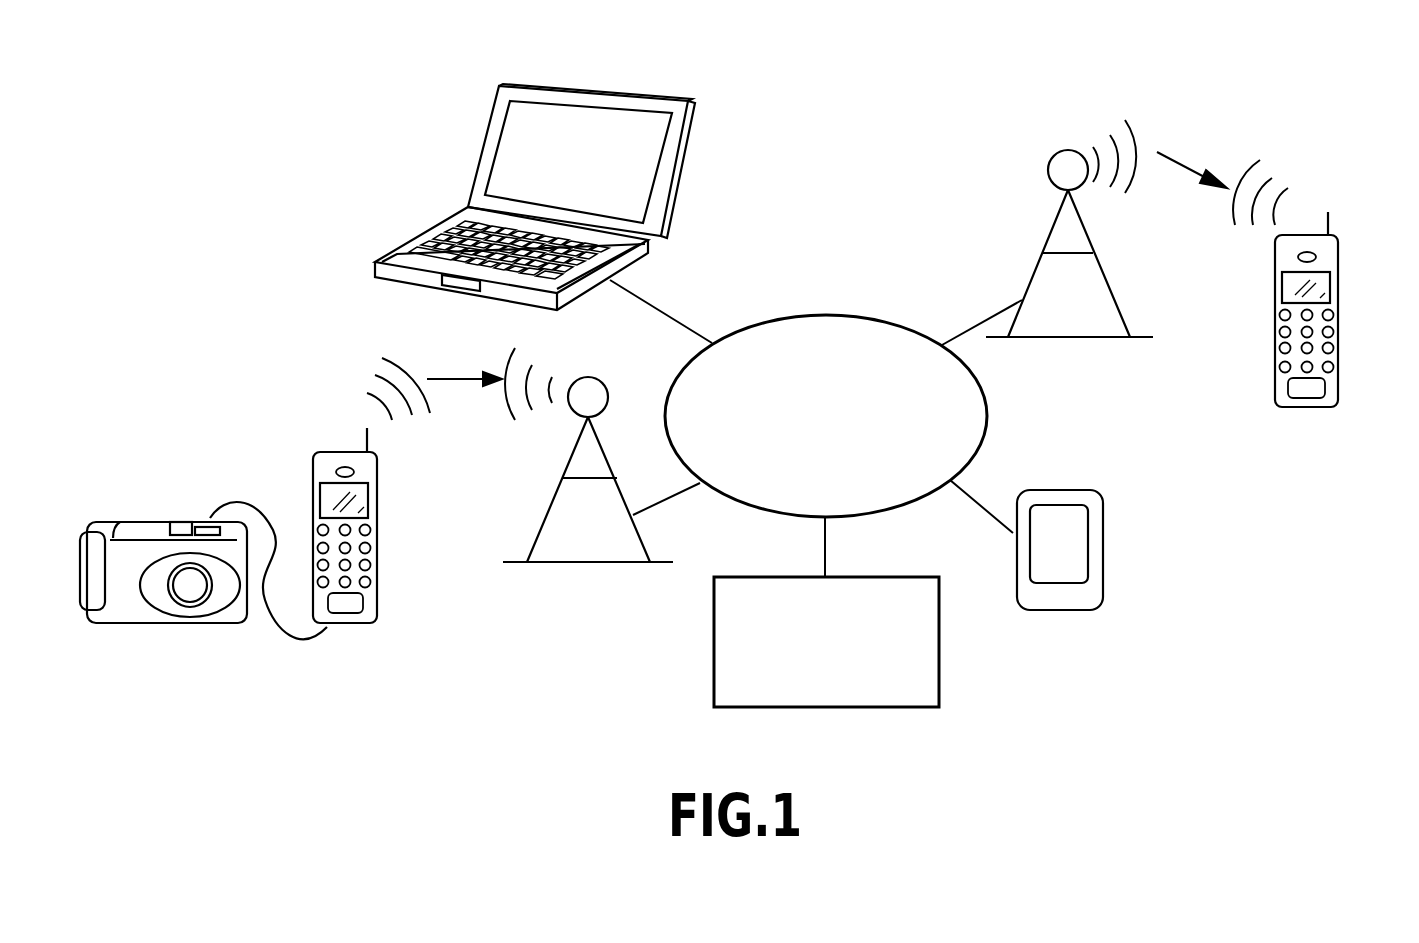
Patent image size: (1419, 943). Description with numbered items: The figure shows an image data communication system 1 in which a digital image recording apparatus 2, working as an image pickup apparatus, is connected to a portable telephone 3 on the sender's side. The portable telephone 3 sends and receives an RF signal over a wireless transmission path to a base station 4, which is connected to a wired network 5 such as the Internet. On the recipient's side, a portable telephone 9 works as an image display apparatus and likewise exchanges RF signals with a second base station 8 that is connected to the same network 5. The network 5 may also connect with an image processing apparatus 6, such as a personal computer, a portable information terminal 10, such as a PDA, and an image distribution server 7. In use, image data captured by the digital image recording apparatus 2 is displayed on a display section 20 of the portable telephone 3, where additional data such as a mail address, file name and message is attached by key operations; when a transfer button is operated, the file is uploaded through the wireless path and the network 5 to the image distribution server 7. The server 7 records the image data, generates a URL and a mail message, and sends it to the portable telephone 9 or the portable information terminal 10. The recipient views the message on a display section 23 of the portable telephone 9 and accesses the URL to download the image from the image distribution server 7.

The image data communication system 1 is at (841, 45).
The digital image recording apparatus 2 is at (127, 520).
The portable telephone 3 is at (389, 490).
The display section 20 is at (368, 503).
The base station 4 is at (643, 537).
The wired network 5 is at (987, 418).
The image processing apparatus 6 is at (680, 163).
The image distribution server 7 is at (940, 678).
The base station 8 is at (1050, 227).
The portable telephone 9 is at (1290, 283).
The display section 23 is at (1280, 288).
The portable information terminal 10 is at (1103, 557).